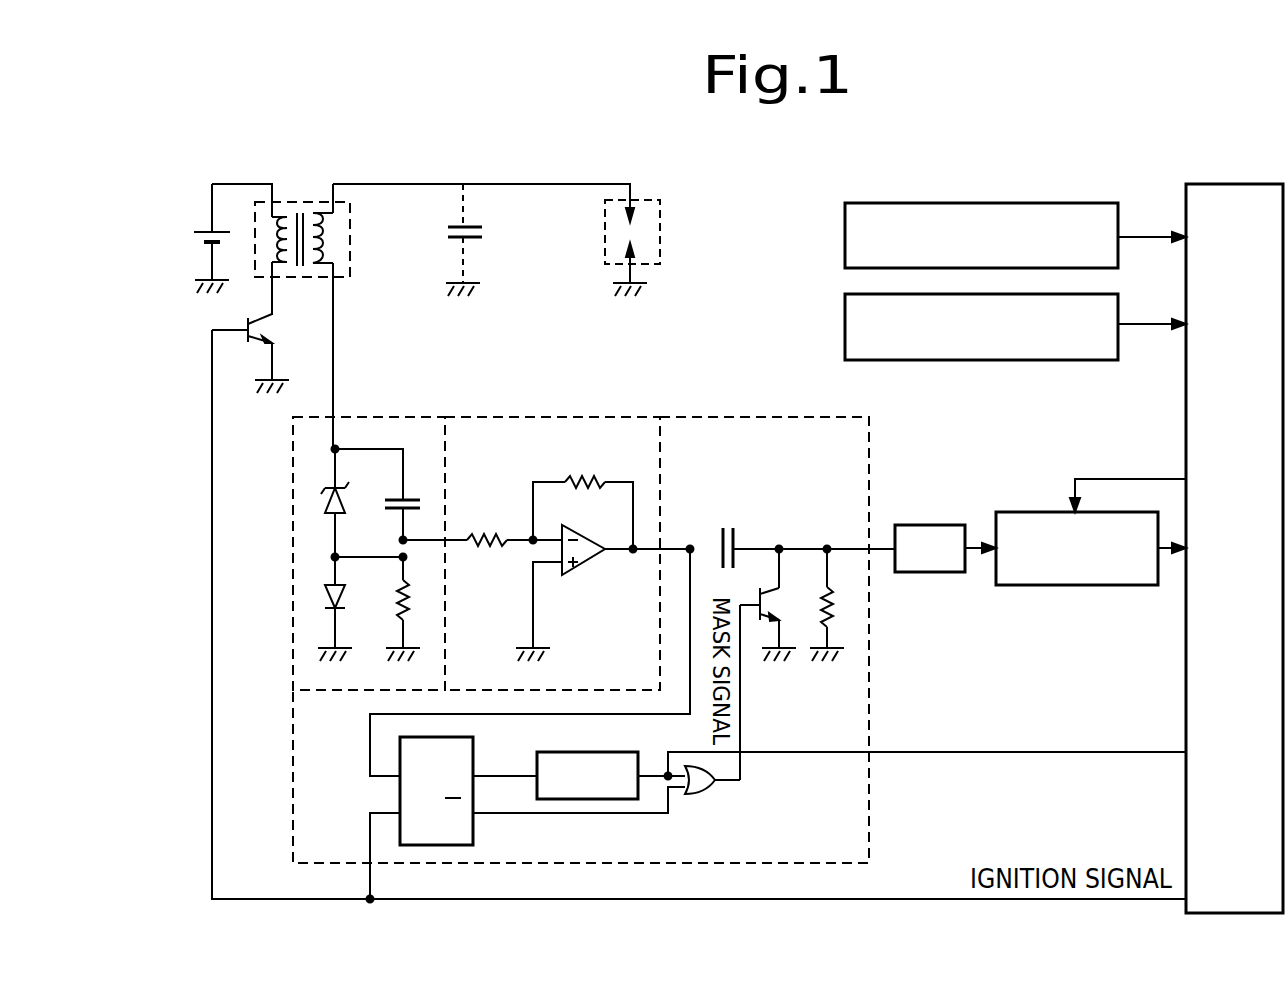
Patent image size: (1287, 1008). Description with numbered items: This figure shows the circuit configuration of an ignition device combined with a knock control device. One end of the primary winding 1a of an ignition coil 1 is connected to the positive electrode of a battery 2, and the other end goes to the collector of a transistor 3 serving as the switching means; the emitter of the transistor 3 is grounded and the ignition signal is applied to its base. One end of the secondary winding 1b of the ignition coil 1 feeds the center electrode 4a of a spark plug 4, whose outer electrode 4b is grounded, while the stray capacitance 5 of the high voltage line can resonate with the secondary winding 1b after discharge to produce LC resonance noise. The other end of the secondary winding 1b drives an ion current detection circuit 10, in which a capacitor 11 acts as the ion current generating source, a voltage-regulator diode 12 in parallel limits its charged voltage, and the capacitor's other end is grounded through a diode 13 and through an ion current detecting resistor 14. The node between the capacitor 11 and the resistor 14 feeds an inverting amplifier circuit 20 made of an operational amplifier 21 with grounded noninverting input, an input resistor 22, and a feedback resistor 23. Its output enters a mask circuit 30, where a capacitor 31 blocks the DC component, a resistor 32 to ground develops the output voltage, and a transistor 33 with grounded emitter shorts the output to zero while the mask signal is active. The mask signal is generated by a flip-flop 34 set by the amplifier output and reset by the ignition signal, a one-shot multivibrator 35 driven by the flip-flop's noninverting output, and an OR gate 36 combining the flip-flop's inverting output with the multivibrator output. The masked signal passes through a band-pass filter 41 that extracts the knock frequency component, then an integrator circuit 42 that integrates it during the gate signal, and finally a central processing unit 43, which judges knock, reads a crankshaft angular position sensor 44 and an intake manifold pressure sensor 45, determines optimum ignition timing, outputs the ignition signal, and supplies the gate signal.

The ignition coil 1 is at (301, 202).
The primary winding 1a is at (280, 240).
The secondary winding 1b is at (327, 233).
The battery 2 is at (226, 239).
The transistor 3 is at (268, 331).
The spark plug 4 is at (647, 197).
The center electrode 4a is at (640, 216).
The outer electrode 4b is at (640, 254).
The stray capacitance 5 is at (488, 233).
The ion current detection circuit 10 is at (392, 416).
The capacitor 11 is at (419, 498).
The voltage-regulator diode 12 is at (325, 498).
The diode 13 is at (343, 597).
The ion current detecting resistor 14 is at (411, 603).
The inverting amplifier circuit 20 is at (552, 416).
The operational amplifier 21 is at (588, 540).
The input resistor 22 is at (490, 530).
The feedback resistor 23 is at (586, 475).
The mask circuit 30 is at (752, 416).
The capacitor 31 is at (728, 522).
The resistor 32 is at (840, 603).
The transistor 33 is at (777, 600).
The flip-flop 34 is at (473, 828).
The one-shot multivibrator 35 is at (584, 756).
The OR gate 36 is at (709, 791).
The band-pass filter 41 is at (932, 572).
The integrator circuit 42 is at (1080, 585).
The central processing unit 43 is at (1225, 184).
The crankshaft angular position sensor 44 is at (845, 225).
The intake manifold pressure sensor 45 is at (845, 307).